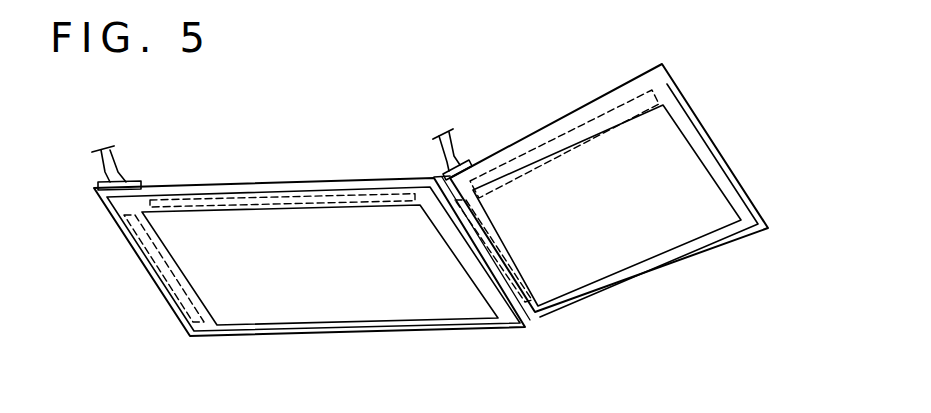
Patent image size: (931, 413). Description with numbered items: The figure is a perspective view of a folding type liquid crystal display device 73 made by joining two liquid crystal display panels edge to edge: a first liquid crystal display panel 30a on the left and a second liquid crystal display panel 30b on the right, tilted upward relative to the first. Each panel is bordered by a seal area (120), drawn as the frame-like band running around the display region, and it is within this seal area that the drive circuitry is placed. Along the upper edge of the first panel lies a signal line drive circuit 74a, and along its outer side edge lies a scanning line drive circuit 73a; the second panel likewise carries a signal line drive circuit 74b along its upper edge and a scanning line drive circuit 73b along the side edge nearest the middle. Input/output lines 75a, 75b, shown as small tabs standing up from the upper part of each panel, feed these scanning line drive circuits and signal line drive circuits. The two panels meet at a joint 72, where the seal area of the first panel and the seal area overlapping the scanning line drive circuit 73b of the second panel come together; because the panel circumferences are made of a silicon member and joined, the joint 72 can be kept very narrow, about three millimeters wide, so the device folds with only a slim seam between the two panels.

The first liquid crystal display panel 30a is at (369, 330).
The second liquid crystal display panel 30b is at (633, 286).
The joint 72 is at (430, 181).
The folding type liquid crystal display device 73 is at (337, 160).
The scanning line drive circuit 73a is at (163, 288).
The scanning line drive circuit 73b is at (542, 323).
The signal line drive circuit 74a is at (267, 182).
The signal line drive circuit 74b is at (575, 128).
The I/O line 75a is at (127, 168).
The I/O line 75b is at (455, 138).
The seal area 120 is at (213, 328).